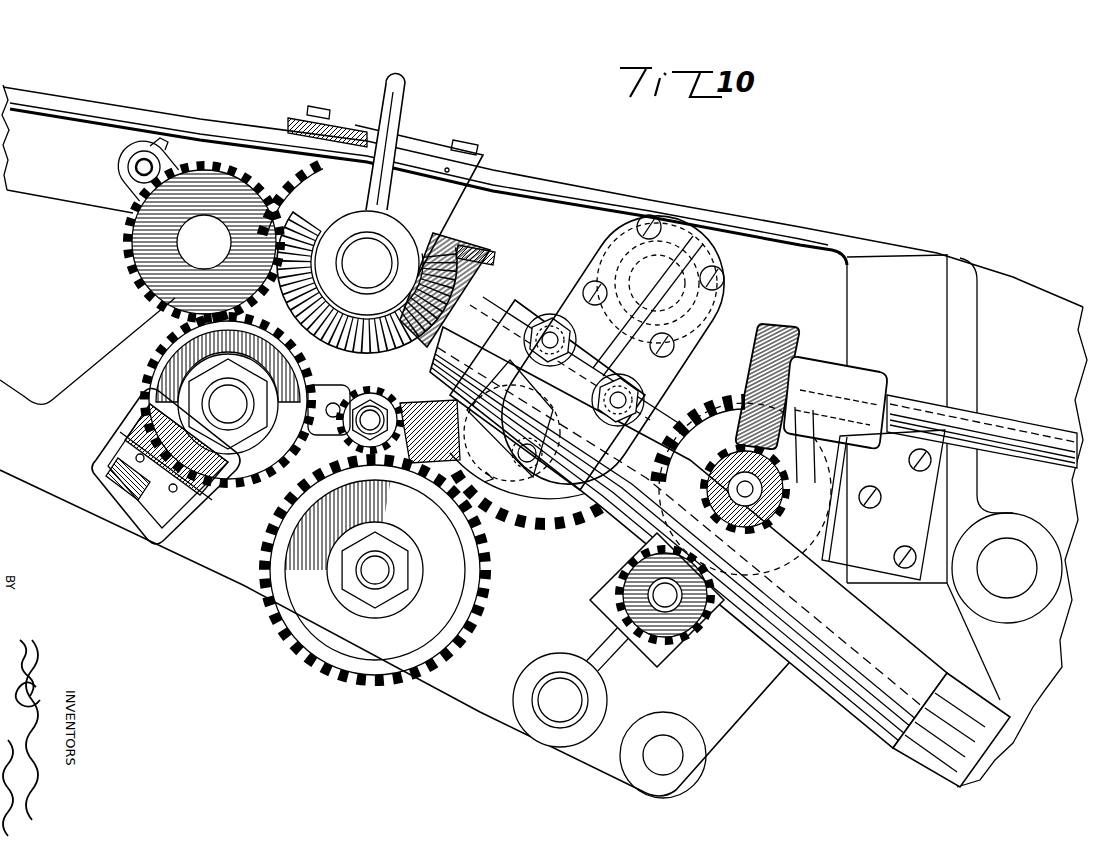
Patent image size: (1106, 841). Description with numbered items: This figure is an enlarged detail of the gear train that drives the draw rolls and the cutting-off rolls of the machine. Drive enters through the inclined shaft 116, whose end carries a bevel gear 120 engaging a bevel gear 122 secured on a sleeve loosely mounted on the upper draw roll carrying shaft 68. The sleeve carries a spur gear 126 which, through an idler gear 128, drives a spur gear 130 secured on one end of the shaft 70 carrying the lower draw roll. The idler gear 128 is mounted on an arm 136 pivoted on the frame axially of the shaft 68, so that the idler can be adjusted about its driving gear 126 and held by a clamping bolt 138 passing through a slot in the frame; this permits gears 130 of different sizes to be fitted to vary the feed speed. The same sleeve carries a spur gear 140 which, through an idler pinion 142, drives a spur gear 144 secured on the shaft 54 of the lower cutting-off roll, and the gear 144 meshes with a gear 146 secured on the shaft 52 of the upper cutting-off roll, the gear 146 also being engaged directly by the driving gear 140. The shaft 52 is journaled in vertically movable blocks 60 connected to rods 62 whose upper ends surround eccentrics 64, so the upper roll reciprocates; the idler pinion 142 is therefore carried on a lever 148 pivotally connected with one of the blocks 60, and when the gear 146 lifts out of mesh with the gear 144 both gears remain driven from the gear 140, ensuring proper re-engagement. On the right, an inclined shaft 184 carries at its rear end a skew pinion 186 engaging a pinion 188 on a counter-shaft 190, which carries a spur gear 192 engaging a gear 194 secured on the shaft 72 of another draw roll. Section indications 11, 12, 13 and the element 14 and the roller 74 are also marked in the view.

The section line 11- 11 is at (740, 187).
The section line 12-12 / rod 12 is at (367, 263).
The section line 13- 13 is at (745, 489).
The nut 14 is at (350, 413).
The shaft 52 is at (572, 447).
The shaft 54 is at (395, 571).
The vertically movable blocks 60 is at (582, 428).
The rods 62 is at (665, 357).
The eccentrics 64 is at (718, 300).
The upper draw roll carrying shaft 68 is at (382, 238).
The shaft 70 is at (210, 403).
The shaft 72 is at (682, 608).
The roller 74 is at (575, 702).
The inclined shaft 116 is at (870, 646).
The bevel gear 120 is at (498, 254).
The bevel gear 122 is at (356, 196).
The spur gear 126 is at (290, 170).
The idler gear 128 is at (128, 243).
The spur gear 130 is at (165, 345).
The arm 136 is at (118, 172).
The clamping bolt 138 is at (130, 160).
The spur gear 140 is at (306, 162).
The idler pinion 142 is at (358, 448).
The spur gear 144 is at (470, 586).
The gear 146 is at (530, 525).
The lever 148 is at (386, 500).
The inclined shaft 184 is at (1018, 430).
The skew pinion 186 is at (786, 332).
The pinion 188 is at (778, 508).
The counter-shaft 190 is at (762, 489).
The spur gear 192 is at (712, 420).
The gear 194 is at (705, 620).